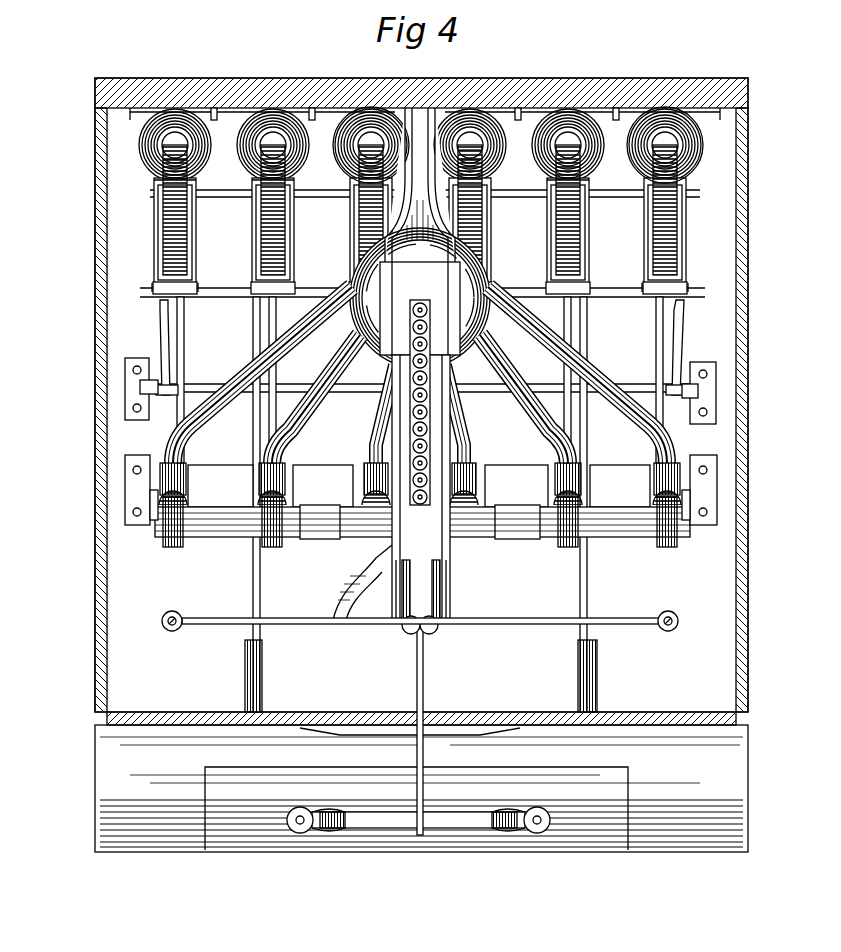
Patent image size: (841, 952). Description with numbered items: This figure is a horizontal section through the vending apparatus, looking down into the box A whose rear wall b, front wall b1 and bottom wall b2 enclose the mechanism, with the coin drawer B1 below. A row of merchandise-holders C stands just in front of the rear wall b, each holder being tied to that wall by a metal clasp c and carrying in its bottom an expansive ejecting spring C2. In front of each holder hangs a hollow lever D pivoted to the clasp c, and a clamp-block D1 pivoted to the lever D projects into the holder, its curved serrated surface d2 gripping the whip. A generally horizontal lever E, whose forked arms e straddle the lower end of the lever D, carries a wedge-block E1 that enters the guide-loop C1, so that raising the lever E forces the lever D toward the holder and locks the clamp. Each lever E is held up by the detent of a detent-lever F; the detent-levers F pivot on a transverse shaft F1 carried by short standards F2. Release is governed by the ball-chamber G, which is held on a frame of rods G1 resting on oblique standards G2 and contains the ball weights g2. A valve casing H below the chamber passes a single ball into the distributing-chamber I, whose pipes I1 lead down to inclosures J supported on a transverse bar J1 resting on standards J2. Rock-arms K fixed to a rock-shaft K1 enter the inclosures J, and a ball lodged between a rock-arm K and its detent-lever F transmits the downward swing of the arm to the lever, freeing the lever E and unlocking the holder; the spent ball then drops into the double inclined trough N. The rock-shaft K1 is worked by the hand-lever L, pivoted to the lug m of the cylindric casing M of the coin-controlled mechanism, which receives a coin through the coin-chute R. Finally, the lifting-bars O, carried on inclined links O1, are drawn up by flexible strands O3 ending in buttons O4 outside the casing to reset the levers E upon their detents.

The casing A is at (110, 660).
The rear wall b is at (652, 78).
The front wall b1 is at (515, 728).
The bottom wall b2 is at (736, 188).
The drawer B1 is at (415, 808).
The metal clasp c is at (228, 114).
The merchandise-holder C is at (342, 160).
The guide-loop C1 is at (152, 288).
The ejecting spring C2 is at (342, 132).
The serrated surface d2 is at (185, 158).
The lever D is at (262, 200).
The clamp-block D1 is at (478, 148).
The arms of lever E e is at (162, 220).
The horizontal lever E is at (184, 336).
The wedge-block E1 is at (360, 264).
The lifting-bar O is at (215, 288).
The link O1 is at (160, 322).
The detent-lever F is at (240, 405).
The shaft F1 is at (196, 384).
The standards F2 is at (137, 420).
The ball-chamber G is at (420, 298).
The frame rods G1 is at (362, 478).
The weights g2 is at (430, 405).
The oblique standards G2 is at (326, 624).
The valve casing H is at (420, 305).
The distributing-chamber I is at (420, 185).
The pipes I1 is at (380, 425).
The inclosure J is at (250, 482).
The transverse bar J1 is at (295, 470).
The standards J2 is at (150, 525).
The rock-arm K is at (236, 537).
The rock-shaft K1 is at (282, 540).
The inclined trough N is at (310, 539).
The coin-chute R is at (352, 566).
The cylindric casing M is at (421, 487).
The lug m is at (432, 632).
The hand-lever L is at (423, 696).
The flexible strands O3 is at (259, 592).
The buttons O4 is at (262, 712).